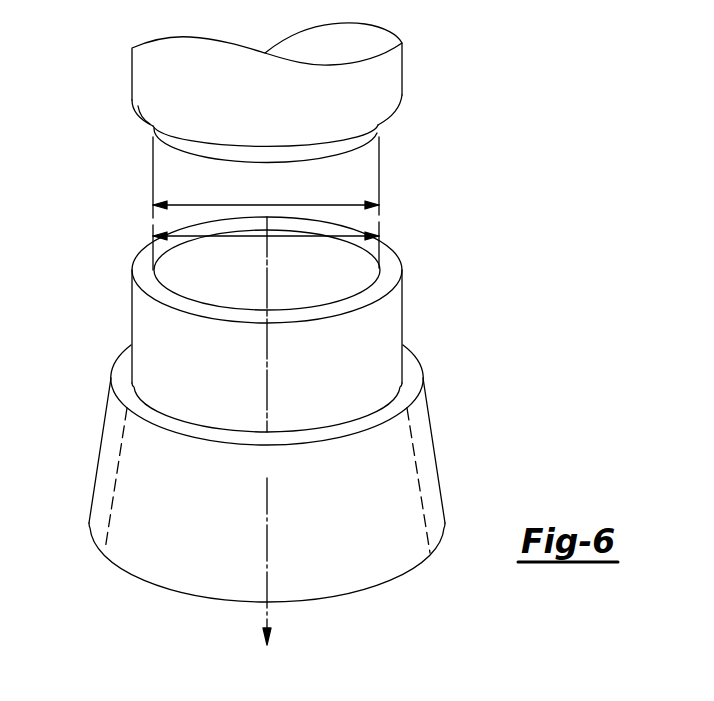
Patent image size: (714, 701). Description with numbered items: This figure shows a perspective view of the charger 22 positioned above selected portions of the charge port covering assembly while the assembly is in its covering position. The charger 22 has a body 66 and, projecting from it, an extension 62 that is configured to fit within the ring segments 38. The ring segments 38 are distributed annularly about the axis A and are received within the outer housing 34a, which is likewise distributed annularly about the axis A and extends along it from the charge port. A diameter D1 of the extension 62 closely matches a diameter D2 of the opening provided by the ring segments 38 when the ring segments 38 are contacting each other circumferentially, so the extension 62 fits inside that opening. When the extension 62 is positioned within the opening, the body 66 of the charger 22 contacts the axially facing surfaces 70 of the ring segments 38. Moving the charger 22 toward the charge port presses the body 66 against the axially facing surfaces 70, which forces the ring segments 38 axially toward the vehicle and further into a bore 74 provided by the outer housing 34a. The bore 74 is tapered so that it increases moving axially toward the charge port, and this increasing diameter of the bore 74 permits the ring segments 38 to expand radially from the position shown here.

The charger 22 is at (388, 88).
The extension 62 is at (363, 143).
The body 66 is at (148, 120).
The axially facing surfaces 70 is at (141, 285).
The ring segments 38 is at (387, 324).
The bore 74 is at (410, 497).
The outer housing 34a is at (434, 520).
The diameter of the extension D1 is at (351, 203).
The diameter of the opening D2 is at (351, 234).
The axis A is at (265, 610).